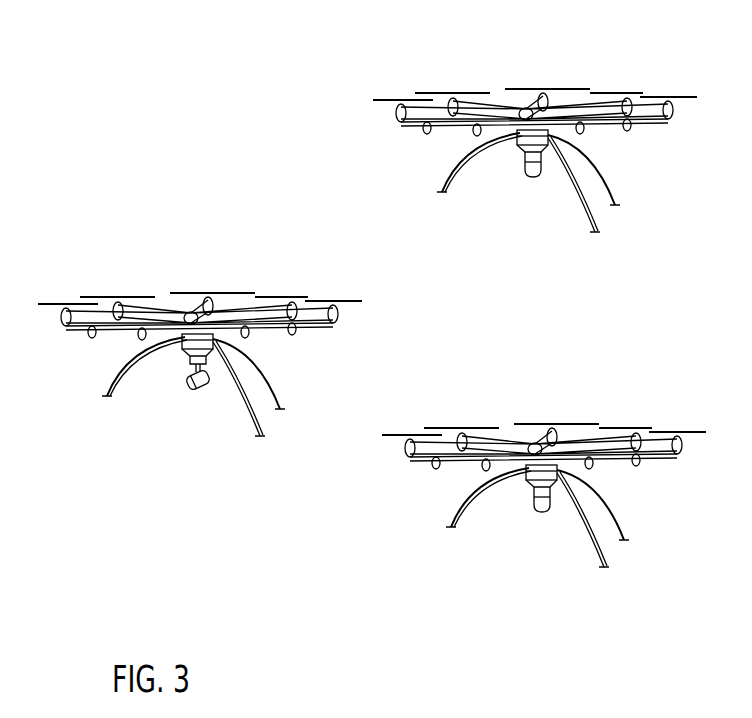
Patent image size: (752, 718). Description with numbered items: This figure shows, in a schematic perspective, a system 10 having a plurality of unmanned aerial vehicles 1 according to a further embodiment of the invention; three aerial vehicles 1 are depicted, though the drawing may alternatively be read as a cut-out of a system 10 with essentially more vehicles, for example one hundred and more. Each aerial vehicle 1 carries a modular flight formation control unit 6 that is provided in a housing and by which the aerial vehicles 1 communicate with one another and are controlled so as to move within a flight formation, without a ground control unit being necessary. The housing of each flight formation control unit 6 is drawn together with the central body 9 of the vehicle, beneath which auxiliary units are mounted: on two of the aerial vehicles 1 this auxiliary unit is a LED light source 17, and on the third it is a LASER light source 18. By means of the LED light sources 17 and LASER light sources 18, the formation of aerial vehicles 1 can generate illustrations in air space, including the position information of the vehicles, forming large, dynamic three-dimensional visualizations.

The system 10 is at (190, 43).
The unmanned aerial vehicle 1 is at (430, 165).
The modular flight formation control unit 6 is at (550, 143).
The body / housing 9 is at (532, 159).
The LED light source 17 is at (532, 180).
The LASER light source 18 is at (199, 386).